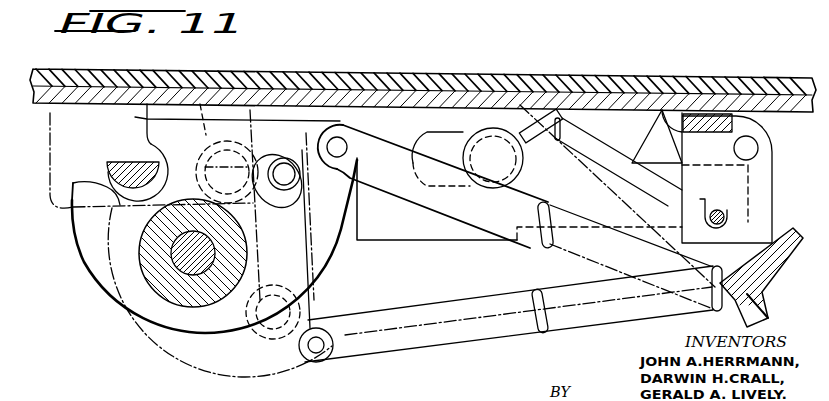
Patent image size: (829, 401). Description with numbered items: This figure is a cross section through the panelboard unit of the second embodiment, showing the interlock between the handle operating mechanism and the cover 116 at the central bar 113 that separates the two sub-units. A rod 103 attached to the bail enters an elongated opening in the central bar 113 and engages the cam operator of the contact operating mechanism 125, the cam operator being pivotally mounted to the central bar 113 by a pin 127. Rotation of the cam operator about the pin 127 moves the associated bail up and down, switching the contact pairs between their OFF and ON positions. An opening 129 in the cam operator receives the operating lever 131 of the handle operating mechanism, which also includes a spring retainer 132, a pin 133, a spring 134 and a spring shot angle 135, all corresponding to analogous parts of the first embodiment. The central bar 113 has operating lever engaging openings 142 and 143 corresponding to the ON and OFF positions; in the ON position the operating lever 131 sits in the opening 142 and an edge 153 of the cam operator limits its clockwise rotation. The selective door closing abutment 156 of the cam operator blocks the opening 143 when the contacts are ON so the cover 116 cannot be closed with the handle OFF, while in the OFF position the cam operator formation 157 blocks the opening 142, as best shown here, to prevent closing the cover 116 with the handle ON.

The extending rod 103 is at (128, 252).
The central bar 113 is at (423, 57).
The cover 116 is at (536, 77).
The contact operating mechanism 125 is at (115, 333).
The pin 127 is at (172, 240).
The opening 129 is at (152, 152).
The operating lever 131 is at (110, 163).
The spring retainer 132 is at (487, 332).
The pin 133 is at (326, 350).
The spring 134 is at (603, 325).
The spring shot angle 135 is at (772, 258).
The operating lever engaging opening 142 is at (232, 75).
The operating lever engaging opening 143 is at (92, 80).
The edge 153 is at (139, 128).
The selective door closing abutment 156 is at (83, 197).
The cam operator formation 157 is at (250, 122).